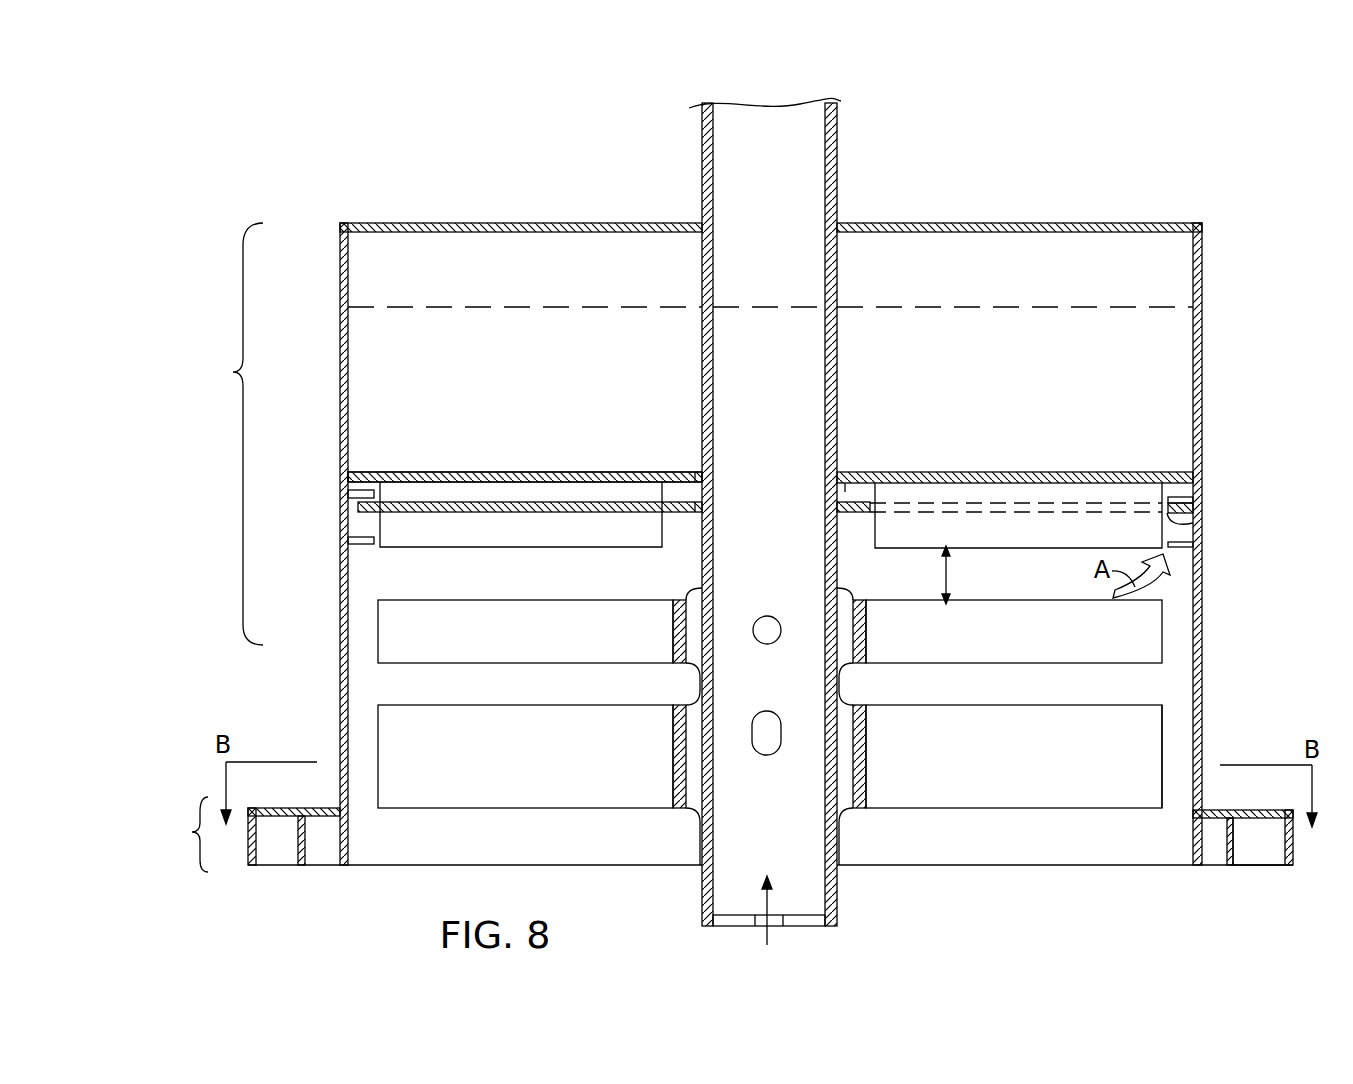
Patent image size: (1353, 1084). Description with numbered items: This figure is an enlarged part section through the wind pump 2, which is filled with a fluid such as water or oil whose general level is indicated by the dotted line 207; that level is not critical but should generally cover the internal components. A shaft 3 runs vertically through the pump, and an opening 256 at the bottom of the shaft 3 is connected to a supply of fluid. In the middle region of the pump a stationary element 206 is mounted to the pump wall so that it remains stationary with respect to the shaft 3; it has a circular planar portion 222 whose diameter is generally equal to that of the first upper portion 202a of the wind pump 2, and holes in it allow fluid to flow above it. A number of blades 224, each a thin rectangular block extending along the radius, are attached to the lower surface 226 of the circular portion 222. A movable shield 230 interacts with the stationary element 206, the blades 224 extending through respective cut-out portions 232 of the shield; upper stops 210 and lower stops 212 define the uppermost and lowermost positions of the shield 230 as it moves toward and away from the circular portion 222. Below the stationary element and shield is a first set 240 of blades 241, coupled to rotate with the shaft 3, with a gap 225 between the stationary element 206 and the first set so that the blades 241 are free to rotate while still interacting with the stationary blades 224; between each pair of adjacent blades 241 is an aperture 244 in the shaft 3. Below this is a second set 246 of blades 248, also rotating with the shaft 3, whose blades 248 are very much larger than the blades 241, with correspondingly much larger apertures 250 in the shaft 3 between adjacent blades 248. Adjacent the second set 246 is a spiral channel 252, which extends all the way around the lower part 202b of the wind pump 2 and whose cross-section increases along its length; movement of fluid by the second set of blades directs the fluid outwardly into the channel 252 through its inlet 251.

The wind pump 2 is at (1040, 222).
The shaft 3 is at (838, 153).
The first upper portion 202a is at (215, 434).
The lower part 202b is at (166, 834).
The stationary element 206 is at (477, 470).
The fluid level 207 is at (1140, 310).
The upper stops 210 is at (352, 490).
The lower stops 212 is at (352, 548).
The circular planar portion 222 is at (613, 471).
The blades 224 is at (483, 540).
The gap 225 is at (950, 575).
The lower surface 226 is at (864, 490).
The movable shield 230 is at (561, 501).
The cut-out portions 232 is at (1195, 521).
The first set of blades 240 is at (1155, 640).
The blades 241 is at (497, 640).
The aperture 244 is at (762, 614).
The second set of blades 246 is at (1147, 738).
The blades 248 is at (497, 767).
The aperture 250 is at (762, 757).
The inlet 251 is at (1217, 862).
The spiral channel 252 is at (1258, 860).
The opening 256 is at (775, 926).